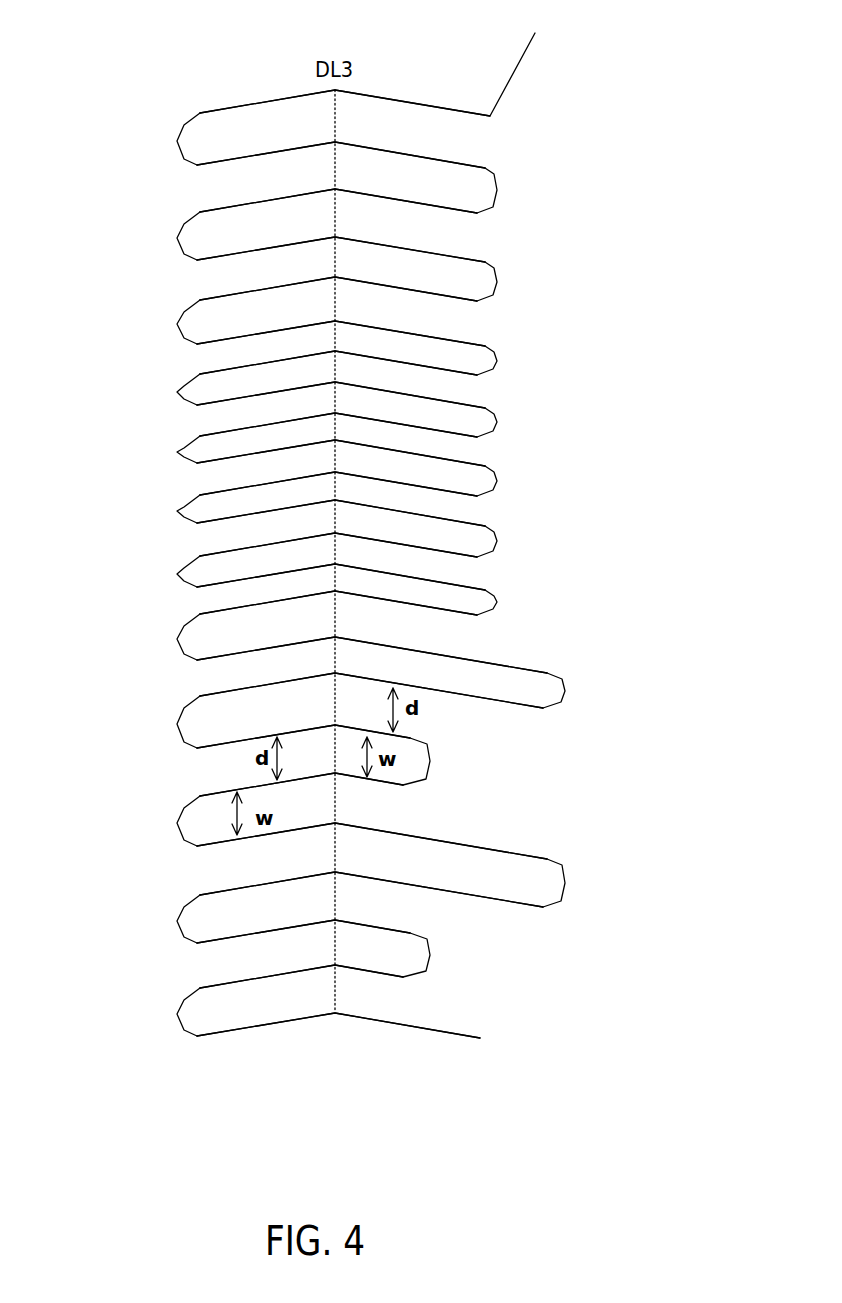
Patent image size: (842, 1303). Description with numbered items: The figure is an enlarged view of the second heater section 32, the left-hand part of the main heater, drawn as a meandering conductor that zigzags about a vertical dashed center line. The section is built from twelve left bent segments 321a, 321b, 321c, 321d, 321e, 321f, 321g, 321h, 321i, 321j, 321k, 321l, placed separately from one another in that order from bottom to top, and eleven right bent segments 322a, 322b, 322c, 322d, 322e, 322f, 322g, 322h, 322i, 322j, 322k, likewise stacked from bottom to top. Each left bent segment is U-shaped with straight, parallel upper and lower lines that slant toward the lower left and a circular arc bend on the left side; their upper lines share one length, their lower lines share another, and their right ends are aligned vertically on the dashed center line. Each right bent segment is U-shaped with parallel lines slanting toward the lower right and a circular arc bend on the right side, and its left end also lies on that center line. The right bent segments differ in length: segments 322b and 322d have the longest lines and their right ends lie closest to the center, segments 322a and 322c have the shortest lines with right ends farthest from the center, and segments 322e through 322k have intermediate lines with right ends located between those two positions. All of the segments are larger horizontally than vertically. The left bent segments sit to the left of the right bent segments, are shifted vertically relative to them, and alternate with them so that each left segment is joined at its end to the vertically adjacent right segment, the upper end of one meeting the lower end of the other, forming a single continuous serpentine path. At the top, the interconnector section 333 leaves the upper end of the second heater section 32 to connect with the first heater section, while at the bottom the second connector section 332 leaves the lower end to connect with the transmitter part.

The second heater section 32 is at (254, 86).
The interconnector section 333 is at (373, 91).
The second connector section 332 is at (428, 1032).
The left bent segment 321a is at (200, 1036).
The left bent segment 321b is at (195, 940).
The left bent segment 321c is at (195, 843).
The left bent segment 321d is at (195, 745).
The left bent segment 321e is at (195, 656).
The left bent segment 321f is at (195, 580).
The left bent segment 321g is at (195, 520).
The left bent segment 321h is at (195, 462).
The left bent segment 321i is at (195, 408).
The left bent segment 321j is at (188, 342).
The left bent segment 321k is at (198, 258).
The left bent segment 321l is at (195, 163).
The right bent segment 322a is at (430, 958).
The right bent segment 322b is at (517, 860).
The right bent segment 322c is at (430, 762).
The right bent segment 322d is at (520, 663).
The right bent segment 322e is at (487, 592).
The right bent segment 322f is at (487, 528).
The right bent segment 322g is at (487, 468).
The right bent segment 322h is at (487, 410).
The right bent segment 322i is at (487, 348).
The right bent segment 322j is at (487, 263).
The right bent segment 322k is at (487, 170).